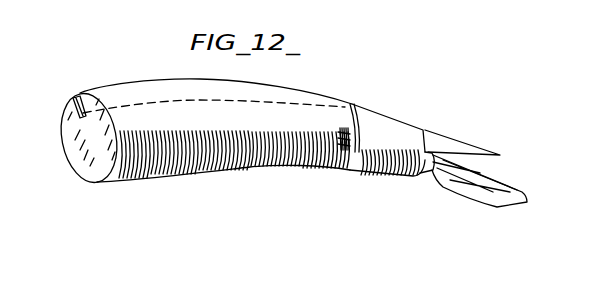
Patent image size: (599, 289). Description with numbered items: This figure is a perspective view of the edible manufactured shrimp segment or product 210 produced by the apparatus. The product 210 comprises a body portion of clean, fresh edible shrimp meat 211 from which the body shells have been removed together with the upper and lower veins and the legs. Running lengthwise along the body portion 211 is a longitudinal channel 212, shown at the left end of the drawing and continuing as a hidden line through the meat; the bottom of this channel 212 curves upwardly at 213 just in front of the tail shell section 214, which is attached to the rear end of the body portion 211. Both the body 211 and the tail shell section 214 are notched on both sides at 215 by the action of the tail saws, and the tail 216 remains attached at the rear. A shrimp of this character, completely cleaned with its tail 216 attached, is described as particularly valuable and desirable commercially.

The edible manufactured shrimp segment or product 210 is at (290, 163).
The body portion of edible shrimp meat 211 is at (182, 146).
The longitudinal channel 212 is at (80, 99).
The upward curve of channel bottom 213 is at (322, 108).
The tail shell section 214 is at (383, 122).
The notches 215 is at (325, 177).
The tail 216 is at (476, 181).